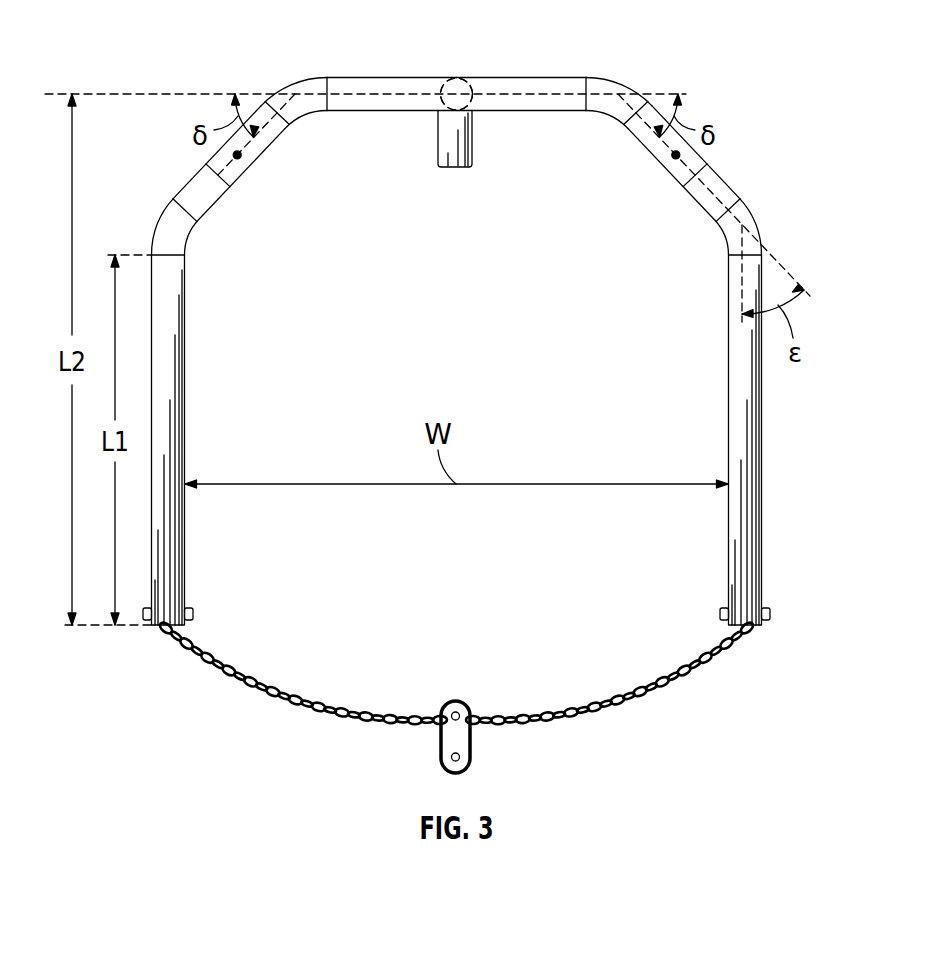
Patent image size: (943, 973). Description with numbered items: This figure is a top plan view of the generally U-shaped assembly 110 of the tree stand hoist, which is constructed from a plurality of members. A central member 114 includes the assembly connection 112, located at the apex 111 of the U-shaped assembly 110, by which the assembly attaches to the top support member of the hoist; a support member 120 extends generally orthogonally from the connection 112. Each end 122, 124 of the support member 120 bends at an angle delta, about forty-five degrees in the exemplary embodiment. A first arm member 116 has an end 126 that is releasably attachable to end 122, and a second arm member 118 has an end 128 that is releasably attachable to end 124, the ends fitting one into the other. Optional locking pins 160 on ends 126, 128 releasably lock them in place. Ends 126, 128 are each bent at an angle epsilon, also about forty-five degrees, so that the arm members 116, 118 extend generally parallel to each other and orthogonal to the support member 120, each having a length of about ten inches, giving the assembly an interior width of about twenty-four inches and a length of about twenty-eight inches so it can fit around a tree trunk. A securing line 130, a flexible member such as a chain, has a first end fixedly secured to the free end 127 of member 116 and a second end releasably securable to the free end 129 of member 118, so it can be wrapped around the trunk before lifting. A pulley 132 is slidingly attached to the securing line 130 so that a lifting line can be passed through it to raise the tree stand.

The U-shaped assembly 110 is at (715, 45).
The apex 111 is at (448, 80).
The assembly connection 112 is at (468, 80).
The central member 114 is at (572, 78).
The first arm member 116 is at (186, 340).
The second arm member 118 is at (727, 348).
The support member 120 is at (345, 78).
The end of support member 122 is at (263, 102).
The end of support member 124 is at (648, 102).
The end of first arm member 126 is at (208, 213).
The end of second arm member 128 is at (705, 213).
The free end of member 116 127 is at (160, 628).
The free end of member 118 129 is at (750, 628).
The securing line 130 is at (630, 693).
The pulley 132 is at (472, 742).
The locking pins 160 is at (244, 160).